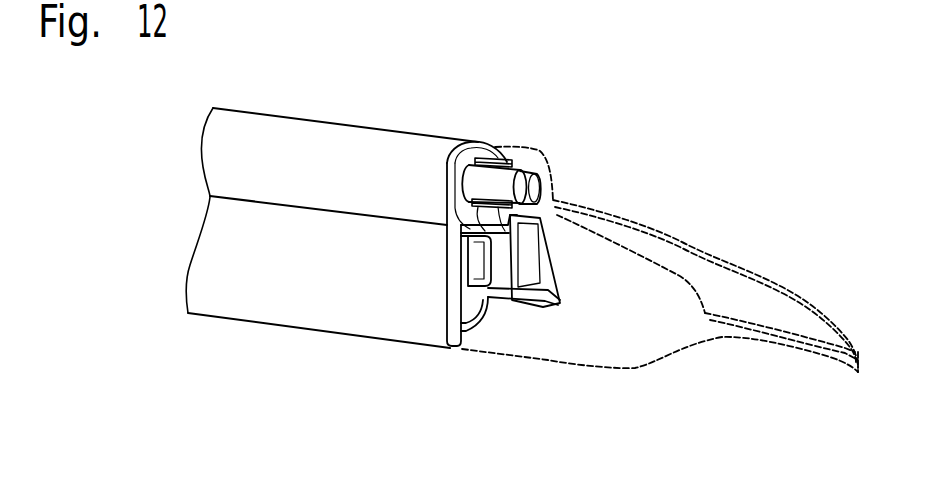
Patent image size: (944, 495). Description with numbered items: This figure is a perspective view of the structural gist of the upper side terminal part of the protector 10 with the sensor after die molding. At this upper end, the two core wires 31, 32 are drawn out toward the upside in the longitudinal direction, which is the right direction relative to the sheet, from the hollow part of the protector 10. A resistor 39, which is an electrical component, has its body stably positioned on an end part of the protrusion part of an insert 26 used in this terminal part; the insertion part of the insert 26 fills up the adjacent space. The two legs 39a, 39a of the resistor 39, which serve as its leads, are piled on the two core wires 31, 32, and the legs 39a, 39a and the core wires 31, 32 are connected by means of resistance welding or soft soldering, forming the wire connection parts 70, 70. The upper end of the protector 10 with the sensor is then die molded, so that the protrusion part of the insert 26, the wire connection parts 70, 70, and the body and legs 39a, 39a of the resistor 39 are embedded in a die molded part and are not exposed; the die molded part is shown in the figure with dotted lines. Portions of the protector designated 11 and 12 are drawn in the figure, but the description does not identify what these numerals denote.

The protector with the sensor 10 is at (295, 338).
The lower portion 11 is at (412, 312).
The upper portion 12 is at (413, 153).
The insert 26 is at (534, 154).
The core wire 31 is at (489, 150).
The core wire 32 is at (441, 243).
The resistor 39 is at (548, 168).
The leg of the resistor 39a is at (548, 162).
The wire connection part 70 is at (518, 160).